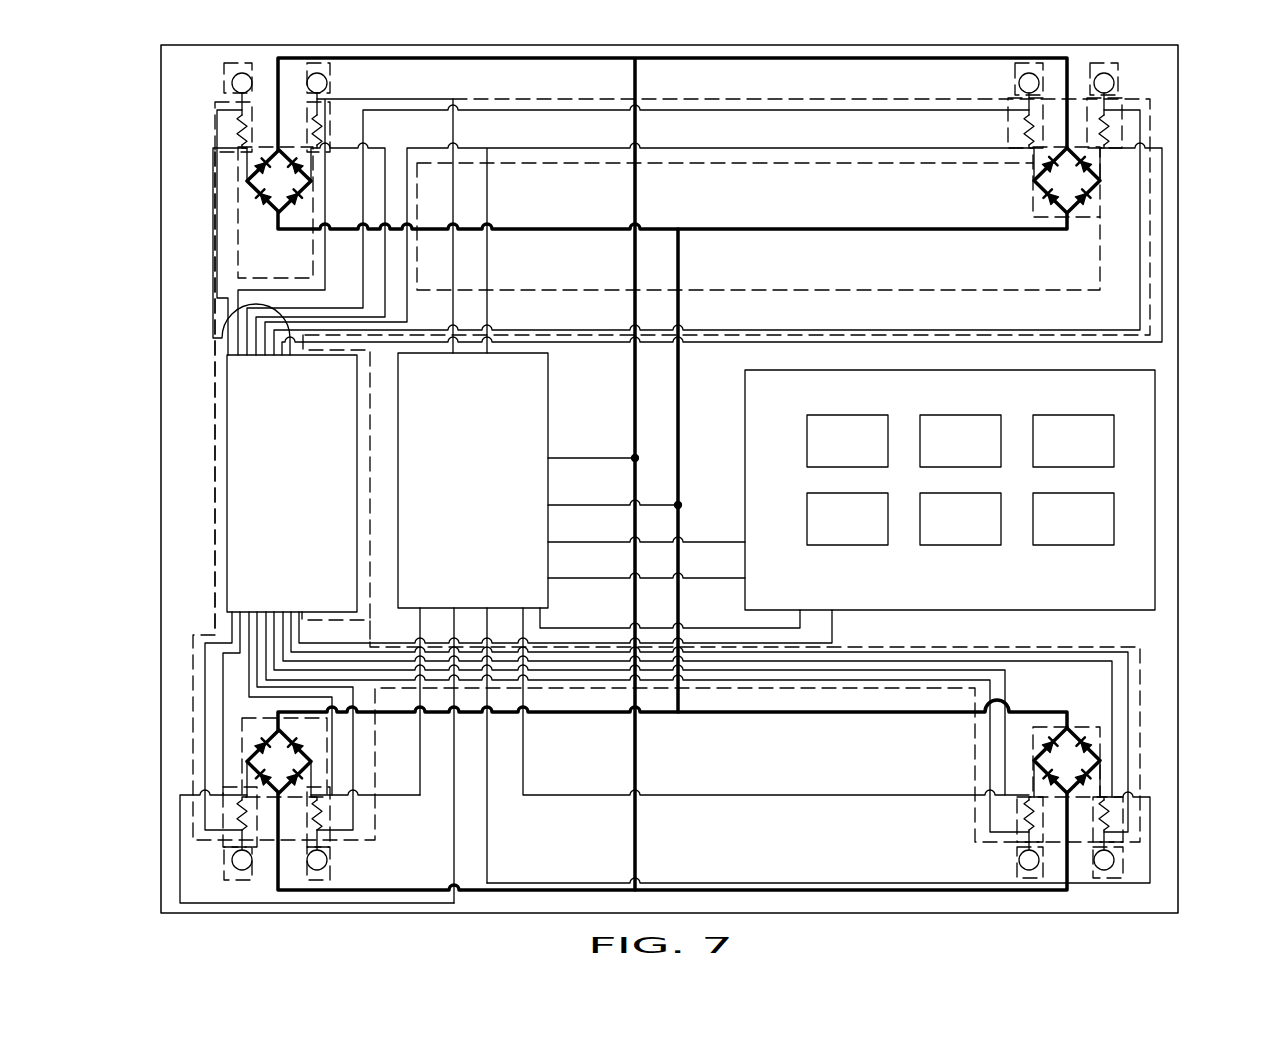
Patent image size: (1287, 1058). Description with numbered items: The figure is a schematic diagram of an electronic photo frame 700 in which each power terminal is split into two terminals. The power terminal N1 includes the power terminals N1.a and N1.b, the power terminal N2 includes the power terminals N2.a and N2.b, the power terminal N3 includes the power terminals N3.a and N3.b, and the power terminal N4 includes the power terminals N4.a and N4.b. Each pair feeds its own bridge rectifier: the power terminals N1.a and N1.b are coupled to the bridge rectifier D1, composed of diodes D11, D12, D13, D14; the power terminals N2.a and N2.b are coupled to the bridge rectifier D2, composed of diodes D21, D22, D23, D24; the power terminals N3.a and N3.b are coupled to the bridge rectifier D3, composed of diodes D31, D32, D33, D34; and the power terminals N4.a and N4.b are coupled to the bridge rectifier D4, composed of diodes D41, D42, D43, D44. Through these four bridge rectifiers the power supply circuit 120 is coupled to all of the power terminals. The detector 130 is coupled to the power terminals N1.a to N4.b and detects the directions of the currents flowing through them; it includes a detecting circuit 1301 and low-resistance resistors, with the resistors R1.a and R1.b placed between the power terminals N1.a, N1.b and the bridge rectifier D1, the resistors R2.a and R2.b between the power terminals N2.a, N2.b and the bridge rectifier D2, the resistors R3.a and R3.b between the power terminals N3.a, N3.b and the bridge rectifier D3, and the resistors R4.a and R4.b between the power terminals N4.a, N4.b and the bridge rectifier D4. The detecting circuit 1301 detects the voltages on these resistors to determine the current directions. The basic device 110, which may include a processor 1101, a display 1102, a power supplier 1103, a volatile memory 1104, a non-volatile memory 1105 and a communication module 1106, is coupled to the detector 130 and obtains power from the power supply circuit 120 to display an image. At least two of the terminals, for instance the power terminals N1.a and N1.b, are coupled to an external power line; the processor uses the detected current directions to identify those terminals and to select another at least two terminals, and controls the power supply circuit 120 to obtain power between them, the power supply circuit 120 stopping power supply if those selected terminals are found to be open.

The electronic photo frame 700 is at (1178, 92).
The basic device 110 is at (1155, 490).
The processor 1101 is at (826, 415).
The display 1102 is at (940, 415).
The power supplier 1103 is at (1053, 415).
The volatile memory 1104 is at (826, 545).
The non-volatile memory 1105 is at (940, 545).
The communication module 1106 is at (1053, 545).
The power supply circuit 120 is at (553, 423).
The detector 130 is at (215, 453).
The detecting circuit 1301 is at (227, 540).
The power terminal N1 is at (237, 63).
The power terminal N1.a is at (232, 83).
The power terminal N1.b is at (327, 83).
The resistor R1.a is at (237, 128).
The resistor R1.b is at (322, 128).
The bridge rectifier D1 is at (240, 240).
The diode D11 is at (263, 165).
The diode D12 is at (295, 165).
The diode D13 is at (263, 197).
The diode D14 is at (295, 197).
The power terminal N2 is at (1090, 63).
The power terminal N2.a is at (1019, 83).
The power terminal N2.b is at (1114, 83).
The resistor R2.a is at (1024, 128).
The resistor R2.b is at (1110, 128).
The bridge rectifier D2 is at (1100, 232).
The diode D21 is at (1051, 165).
The diode D22 is at (1083, 165).
The diode D23 is at (1083, 197).
The diode D24 is at (1051, 197).
The power terminal N3 is at (257, 880).
The power terminal N3.a is at (232, 860).
The power terminal N3.b is at (327, 860).
The resistor R3.a is at (237, 815).
The resistor R3.b is at (322, 815).
The bridge rectifier D3 is at (242, 748).
The diode D31 is at (263, 745).
The diode D32 is at (295, 745).
The diode D33 is at (263, 777).
The diode D34 is at (295, 777).
The power terminal N4 is at (1090, 880).
The power terminal N4.a is at (1019, 860).
The power terminal N4.b is at (1114, 860).
The resistor R4.a is at (1024, 815).
The resistor R4.b is at (1110, 815).
The bridge rectifier D4 is at (1100, 720).
The diode D41 is at (1051, 745).
The diode D42 is at (1083, 745).
The diode D43 is at (1051, 777).
The diode D44 is at (1083, 777).